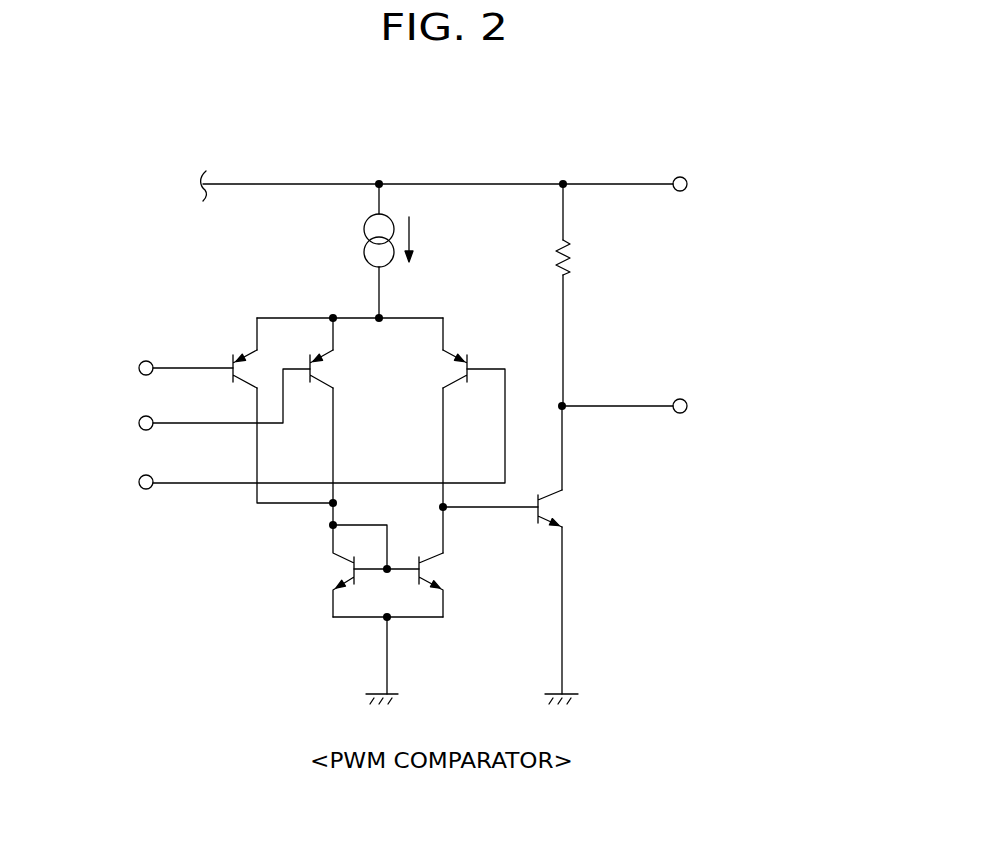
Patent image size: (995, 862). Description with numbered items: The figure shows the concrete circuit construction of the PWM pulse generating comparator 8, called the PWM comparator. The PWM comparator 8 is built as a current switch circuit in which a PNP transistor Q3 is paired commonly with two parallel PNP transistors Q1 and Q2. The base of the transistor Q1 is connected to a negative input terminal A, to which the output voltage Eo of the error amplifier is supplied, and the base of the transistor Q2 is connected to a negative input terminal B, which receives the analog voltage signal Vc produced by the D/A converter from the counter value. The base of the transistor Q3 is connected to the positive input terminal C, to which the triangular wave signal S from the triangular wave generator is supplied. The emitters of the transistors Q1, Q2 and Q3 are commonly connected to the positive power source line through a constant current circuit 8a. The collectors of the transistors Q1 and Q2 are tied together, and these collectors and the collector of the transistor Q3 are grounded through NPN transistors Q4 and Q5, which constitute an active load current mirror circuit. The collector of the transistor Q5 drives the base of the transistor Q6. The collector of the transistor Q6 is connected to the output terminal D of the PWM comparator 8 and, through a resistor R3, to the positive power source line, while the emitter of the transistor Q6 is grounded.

The PWM pulse generating comparator 8 is at (465, 389).
The constant current circuit 8a is at (363, 236).
The (−) input terminal A is at (152, 373).
The (−) input terminal B is at (150, 429).
The (+) input terminal C is at (152, 487).
The output terminal D is at (680, 398).
The PNP transistor Q1 is at (255, 369).
The PNP transistor Q2 is at (333, 369).
The PNP transistor Q3 is at (442, 369).
The NPN transistor Q4 is at (329, 571).
The NPN transistor Q5 is at (445, 585).
The transistor Q6 is at (565, 509).
The resistor R3 is at (579, 257).